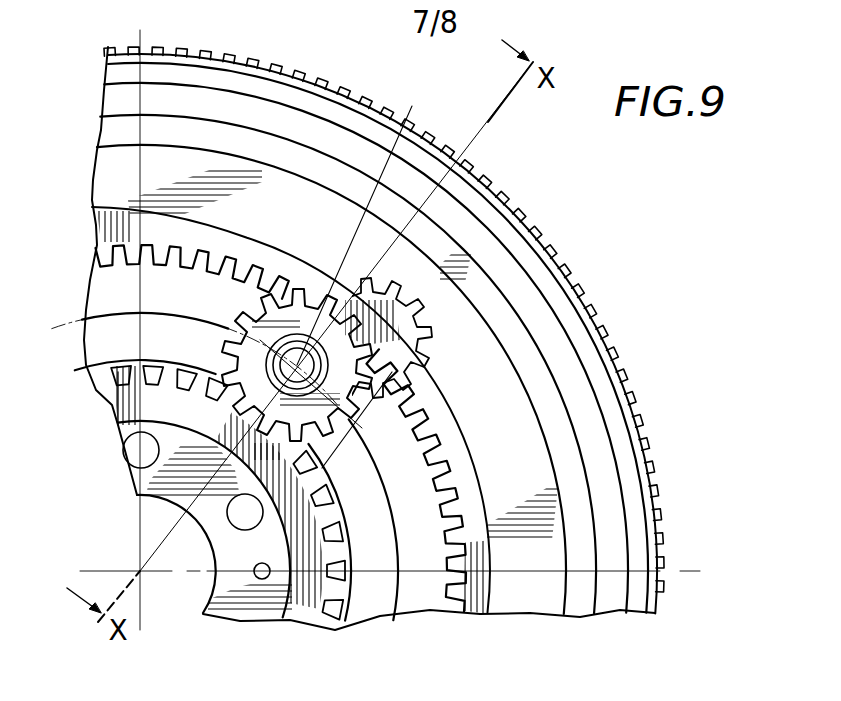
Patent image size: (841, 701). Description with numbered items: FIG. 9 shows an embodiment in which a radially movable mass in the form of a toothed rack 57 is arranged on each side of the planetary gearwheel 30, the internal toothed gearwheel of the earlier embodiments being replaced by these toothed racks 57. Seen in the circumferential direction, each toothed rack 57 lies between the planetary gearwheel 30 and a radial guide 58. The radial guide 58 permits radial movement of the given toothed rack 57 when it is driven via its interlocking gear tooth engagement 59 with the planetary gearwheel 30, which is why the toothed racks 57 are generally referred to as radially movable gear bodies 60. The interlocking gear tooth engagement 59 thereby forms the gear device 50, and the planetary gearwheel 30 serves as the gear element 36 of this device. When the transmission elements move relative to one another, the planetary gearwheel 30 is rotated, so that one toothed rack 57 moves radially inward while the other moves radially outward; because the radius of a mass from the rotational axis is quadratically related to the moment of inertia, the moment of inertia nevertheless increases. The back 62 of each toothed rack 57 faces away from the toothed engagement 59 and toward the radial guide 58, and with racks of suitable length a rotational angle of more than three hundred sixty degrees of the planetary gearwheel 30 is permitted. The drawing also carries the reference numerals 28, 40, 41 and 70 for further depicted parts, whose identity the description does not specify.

The output shaft / hub 28 is at (141, 574).
The planetary gearwheel 30 is at (385, 390).
The gear element 36 is at (333, 305).
The ring gear 40 is at (282, 300).
The planet axis 41 is at (368, 219).
The gear device 50 is at (263, 300).
The toothed rack 57 is at (300, 295).
The radial guide 58 is at (230, 275).
The interlocking gear tooth engagement 59 is at (322, 295).
The radially movable gear body 60 is at (198, 349).
The back 62 is at (228, 298).
The hub web 70 is at (113, 412).